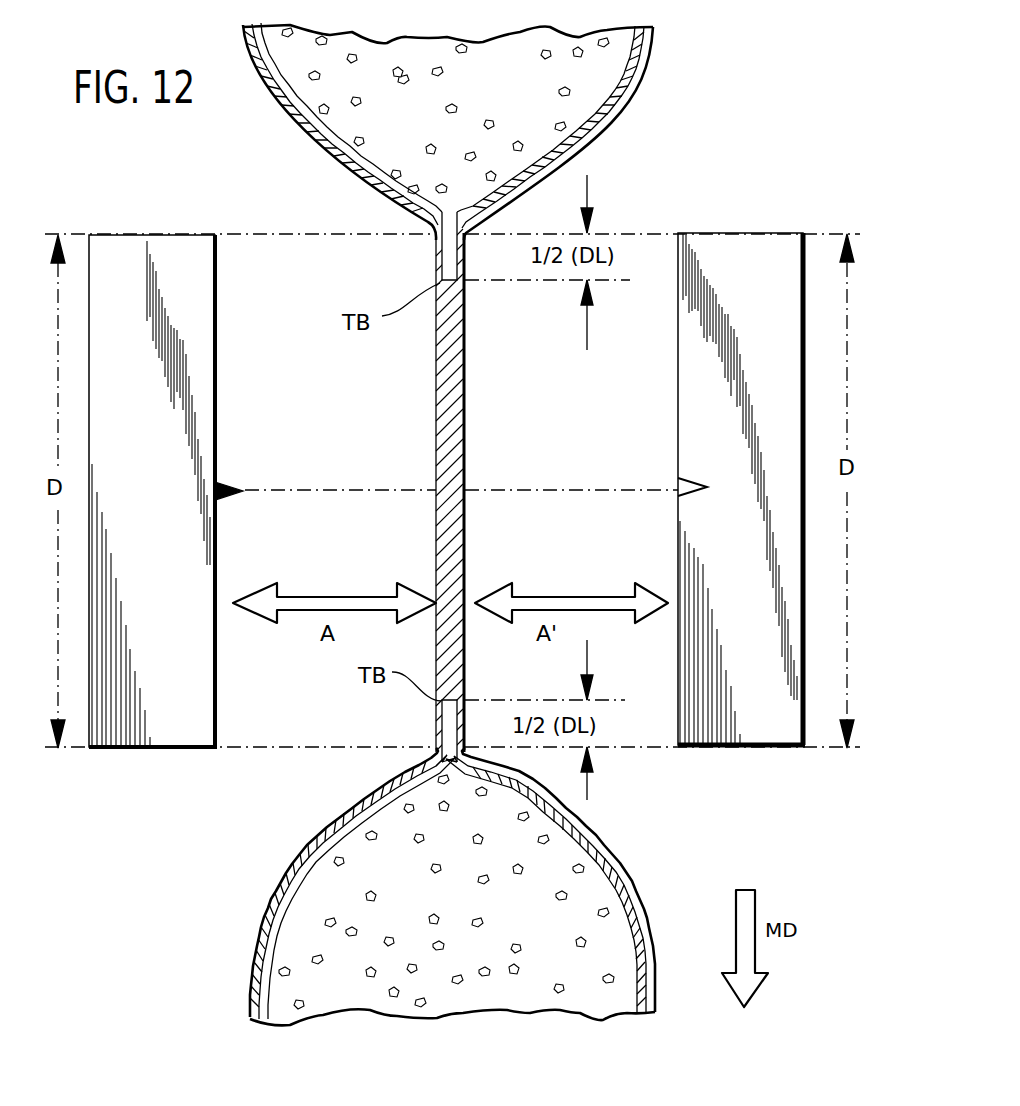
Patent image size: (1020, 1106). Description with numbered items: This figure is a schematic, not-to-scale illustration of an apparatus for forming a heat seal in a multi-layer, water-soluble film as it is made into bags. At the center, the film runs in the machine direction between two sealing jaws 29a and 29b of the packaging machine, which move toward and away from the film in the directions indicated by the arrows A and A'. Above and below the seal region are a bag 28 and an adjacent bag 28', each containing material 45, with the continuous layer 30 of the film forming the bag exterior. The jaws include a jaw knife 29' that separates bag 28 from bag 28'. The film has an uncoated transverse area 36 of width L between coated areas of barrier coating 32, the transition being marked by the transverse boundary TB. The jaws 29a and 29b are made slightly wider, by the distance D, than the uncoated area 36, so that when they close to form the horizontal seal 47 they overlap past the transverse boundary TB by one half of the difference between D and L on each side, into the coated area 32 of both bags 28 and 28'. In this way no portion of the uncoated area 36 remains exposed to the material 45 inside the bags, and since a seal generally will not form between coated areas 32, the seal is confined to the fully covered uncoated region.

The material 45 is at (489, 80).
The continuous layer 30 is at (633, 97).
The bag 28 is at (442, 132).
The bag 28' is at (443, 886).
The barrier coating 32 is at (432, 249).
The horizontal seal 47 is at (436, 383).
The uncoated transverse area 36 is at (436, 530).
The jaw knife 29' is at (461, 460).
The sealing jaw 29b is at (150, 755).
The sealing jaw 29a is at (722, 754).